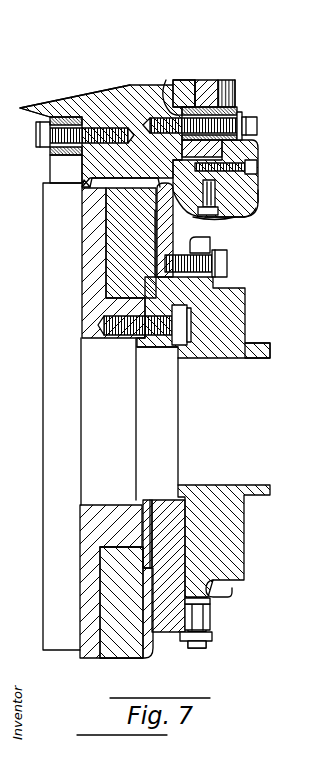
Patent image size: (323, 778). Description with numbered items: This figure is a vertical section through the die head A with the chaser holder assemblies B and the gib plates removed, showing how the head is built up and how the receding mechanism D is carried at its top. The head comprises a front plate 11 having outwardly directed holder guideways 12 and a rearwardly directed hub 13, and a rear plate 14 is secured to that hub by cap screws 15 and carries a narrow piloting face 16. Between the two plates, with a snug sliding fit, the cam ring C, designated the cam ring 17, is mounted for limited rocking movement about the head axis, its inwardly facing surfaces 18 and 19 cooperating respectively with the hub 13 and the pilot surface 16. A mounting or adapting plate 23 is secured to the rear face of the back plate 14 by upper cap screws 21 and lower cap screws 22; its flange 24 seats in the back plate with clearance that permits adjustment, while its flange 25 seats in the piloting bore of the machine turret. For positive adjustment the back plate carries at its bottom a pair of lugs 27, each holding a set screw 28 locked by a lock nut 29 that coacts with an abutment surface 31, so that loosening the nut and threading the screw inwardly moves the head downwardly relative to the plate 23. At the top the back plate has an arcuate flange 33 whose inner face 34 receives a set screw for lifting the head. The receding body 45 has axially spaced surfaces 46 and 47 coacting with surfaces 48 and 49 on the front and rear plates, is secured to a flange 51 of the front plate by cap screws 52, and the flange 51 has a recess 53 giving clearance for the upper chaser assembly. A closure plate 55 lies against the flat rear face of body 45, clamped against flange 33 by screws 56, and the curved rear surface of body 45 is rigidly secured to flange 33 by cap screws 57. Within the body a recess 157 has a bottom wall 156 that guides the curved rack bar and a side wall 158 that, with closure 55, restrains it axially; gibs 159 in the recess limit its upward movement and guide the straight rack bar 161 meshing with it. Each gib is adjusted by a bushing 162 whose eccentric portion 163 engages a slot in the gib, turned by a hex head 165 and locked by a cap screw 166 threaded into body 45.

The front plate 11 is at (81, 586).
The holder guideways 12 is at (55, 555).
The flange or hub 13 is at (111, 506).
The rear plate 14 is at (166, 506).
The cap screws 15 is at (166, 338).
The piloting face 16 is at (150, 512).
The cam ring 17 is at (118, 218).
The inwardly facing surface 18 is at (115, 541).
The inwardly facing surface 19 is at (110, 588).
The upper cap screws 21 is at (228, 262).
The lower cap screws 22 is at (218, 592).
The mounting or adapting plate 23 is at (246, 297).
The flange 24 is at (184, 360).
The flange 25 is at (255, 352).
The lugs 27 is at (212, 617).
The set screw 28 is at (212, 636).
The lock nut 29 is at (208, 644).
The abutment surface 31 is at (212, 602).
The flange 33 is at (217, 184).
The inner face 34 is at (256, 214).
The body 45 is at (97, 118).
The surface 46 is at (82, 180).
The surface 47 is at (246, 215).
The surface 48 is at (84, 186).
The surface 49 is at (196, 232).
The flange 51 is at (50, 153).
The cap screws 52 is at (36, 137).
The recess 53 is at (66, 169).
The closure plate 55 is at (237, 90).
The screws 56 is at (258, 168).
The screws 57 is at (215, 218).
The bottom wall 156 is at (246, 200).
The recess 157 is at (168, 84).
The side wall 158 is at (228, 155).
The gibs 159 is at (189, 82).
The straight rack bar 161 is at (223, 88).
The bushing 162 is at (238, 110).
The eccentric portion 163 is at (203, 97).
The hex head 165 is at (244, 118).
The cap screw 166 is at (257, 129).
The head A is at (84, 300).
The chaser holders B is at (250, 222).
The cam plate or ring C is at (110, 251).
The receding mechanism D is at (117, 112).